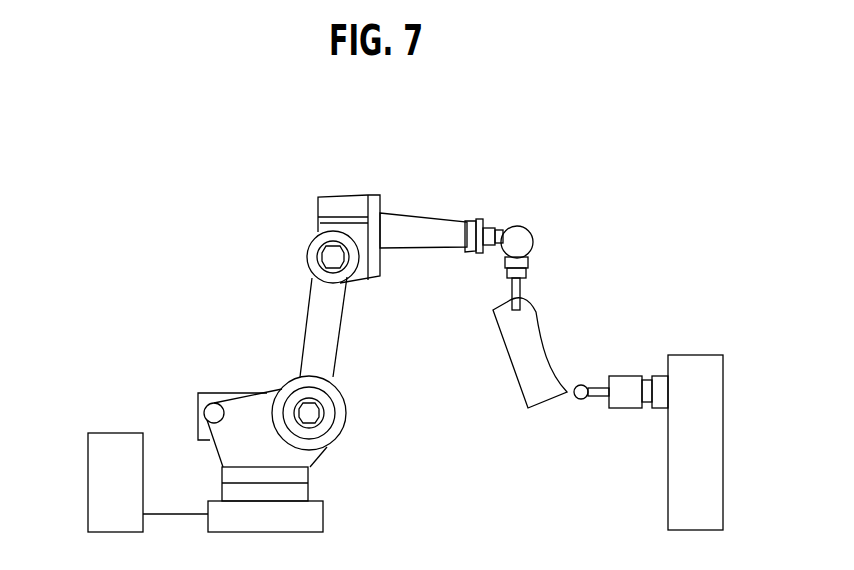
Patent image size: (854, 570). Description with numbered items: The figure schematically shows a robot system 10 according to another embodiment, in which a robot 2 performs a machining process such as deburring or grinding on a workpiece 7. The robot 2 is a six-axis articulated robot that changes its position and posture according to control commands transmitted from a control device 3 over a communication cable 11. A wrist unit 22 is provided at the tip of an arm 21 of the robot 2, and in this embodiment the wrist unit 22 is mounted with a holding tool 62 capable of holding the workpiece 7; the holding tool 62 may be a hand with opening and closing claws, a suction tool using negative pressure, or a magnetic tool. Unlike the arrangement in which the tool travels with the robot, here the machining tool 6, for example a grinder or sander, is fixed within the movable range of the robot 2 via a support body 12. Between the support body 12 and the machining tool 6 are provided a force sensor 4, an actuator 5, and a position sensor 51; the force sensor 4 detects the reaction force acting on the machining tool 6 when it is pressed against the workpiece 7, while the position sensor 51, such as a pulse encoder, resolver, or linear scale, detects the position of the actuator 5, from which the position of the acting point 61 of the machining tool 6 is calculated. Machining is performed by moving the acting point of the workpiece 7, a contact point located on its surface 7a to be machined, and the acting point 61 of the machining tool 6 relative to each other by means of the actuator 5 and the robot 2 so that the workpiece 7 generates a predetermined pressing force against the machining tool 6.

The robot system 10 is at (119, 224).
The robot 2 is at (241, 273).
The control device 3 is at (87, 447).
The communication cable 11 is at (177, 514).
The arm 21 is at (427, 217).
The wrist unit 22 is at (540, 259).
The holding tool 62 is at (507, 297).
The workpiece 7 is at (553, 403).
The surface 7a is at (556, 312).
The machining tool 6 is at (598, 409).
The acting point 61 is at (584, 385).
The actuator 5 is at (623, 376).
The position sensor 51 is at (647, 408).
The force sensor 4 is at (657, 376).
The support body 12 is at (706, 355).